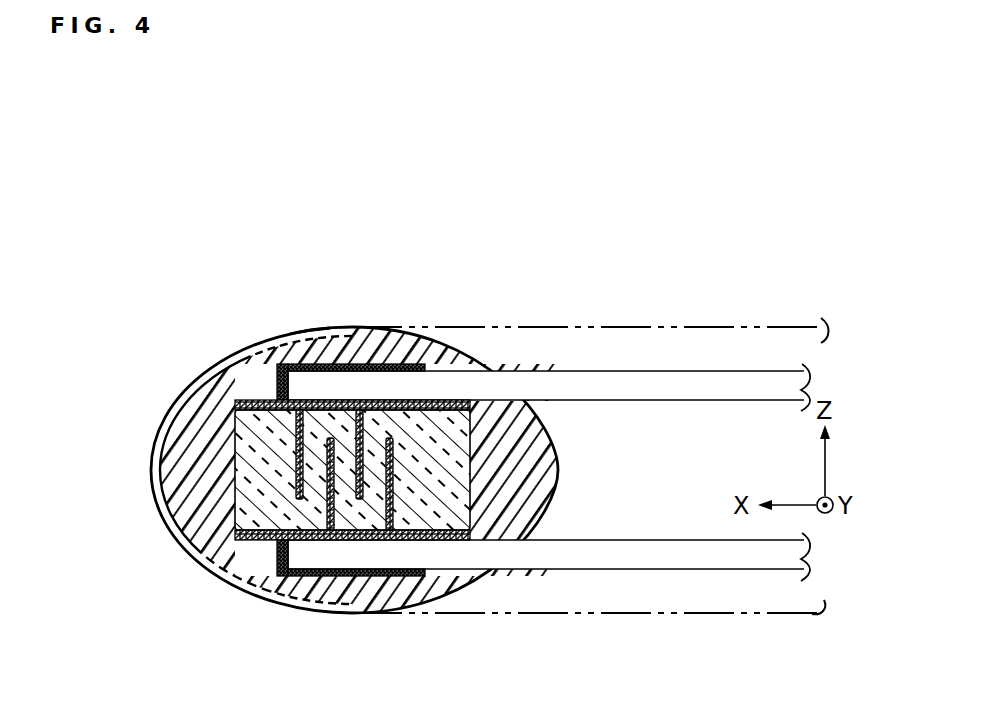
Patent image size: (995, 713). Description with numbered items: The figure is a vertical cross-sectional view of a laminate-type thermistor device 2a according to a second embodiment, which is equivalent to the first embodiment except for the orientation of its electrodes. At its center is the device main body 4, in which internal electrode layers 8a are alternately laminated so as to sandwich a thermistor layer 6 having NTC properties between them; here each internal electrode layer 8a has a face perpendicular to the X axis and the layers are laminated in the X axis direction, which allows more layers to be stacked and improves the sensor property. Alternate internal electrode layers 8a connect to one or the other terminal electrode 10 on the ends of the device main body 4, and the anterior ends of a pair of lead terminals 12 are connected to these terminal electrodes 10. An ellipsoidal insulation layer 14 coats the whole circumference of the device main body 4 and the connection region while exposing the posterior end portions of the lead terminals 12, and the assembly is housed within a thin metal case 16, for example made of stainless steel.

The thermistor device 2a is at (308, 328).
The device main body 4 is at (178, 502).
The thermistor layer 6 is at (352, 472).
The internal electrode layer 8a is at (296, 423).
The terminal electrode 10 is at (373, 400).
The lead terminal 12 is at (693, 379).
The insulation layer 14 is at (228, 357).
The metal case 16 is at (594, 327).